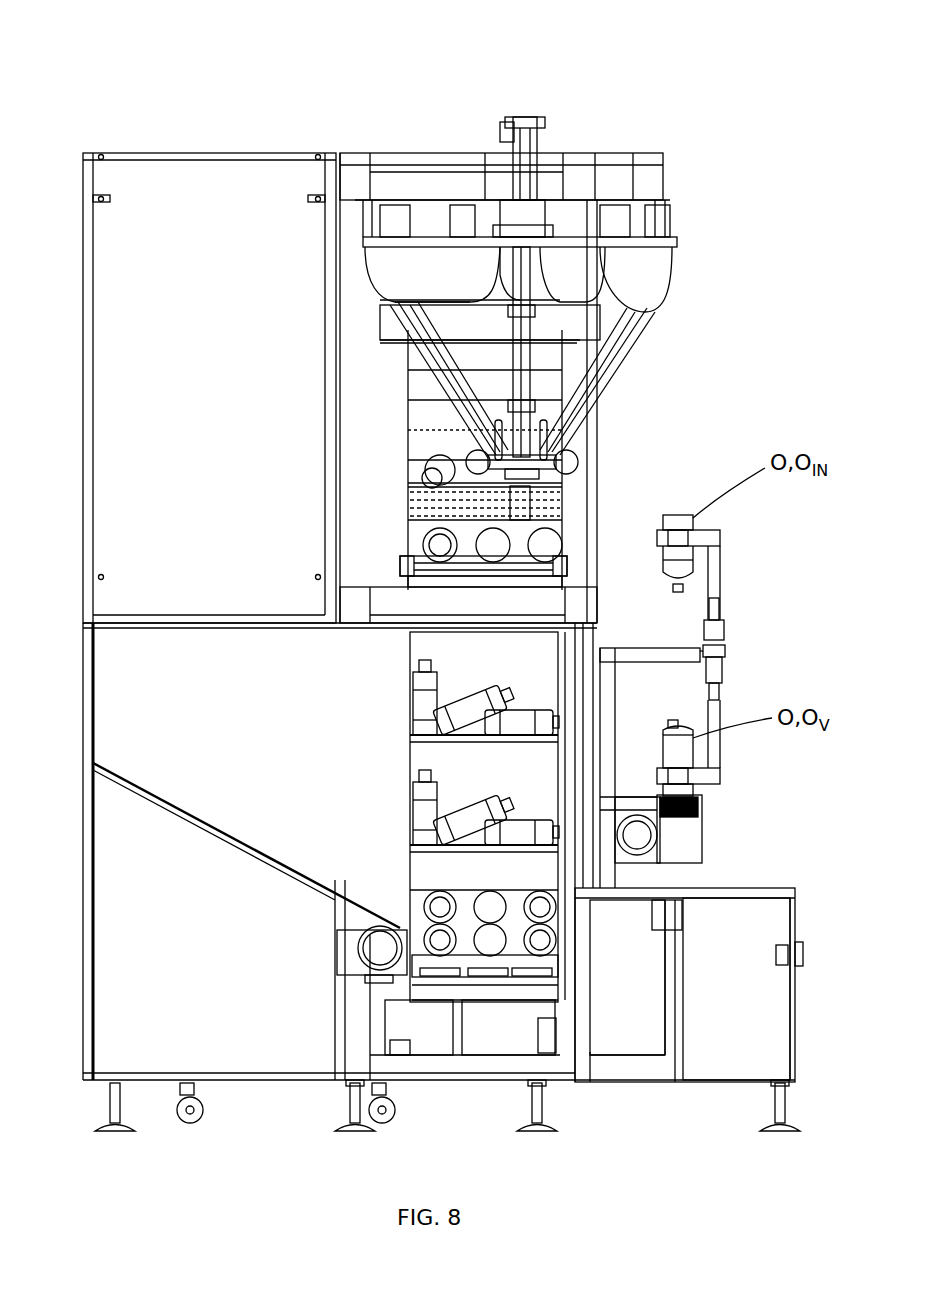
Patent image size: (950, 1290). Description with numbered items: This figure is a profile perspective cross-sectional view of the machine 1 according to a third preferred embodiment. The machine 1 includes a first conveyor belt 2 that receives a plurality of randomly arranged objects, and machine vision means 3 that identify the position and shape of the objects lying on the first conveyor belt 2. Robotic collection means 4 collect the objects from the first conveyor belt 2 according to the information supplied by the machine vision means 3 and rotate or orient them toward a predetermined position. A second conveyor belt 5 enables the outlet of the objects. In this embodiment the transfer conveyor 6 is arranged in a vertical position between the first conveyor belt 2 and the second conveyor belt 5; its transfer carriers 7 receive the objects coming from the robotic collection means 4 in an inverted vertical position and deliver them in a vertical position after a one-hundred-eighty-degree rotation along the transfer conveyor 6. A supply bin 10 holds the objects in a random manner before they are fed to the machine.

The machine 1 is at (128, 100).
The first conveyor belt 2 is at (566, 556).
The machine vision means 3 is at (557, 296).
The robotic collection means 4 is at (530, 385).
The second conveyor belt 5 is at (700, 797).
The transfer conveyor 6 is at (722, 637).
The transfer carriers 7 is at (724, 529).
The supply bin 10 is at (160, 798).